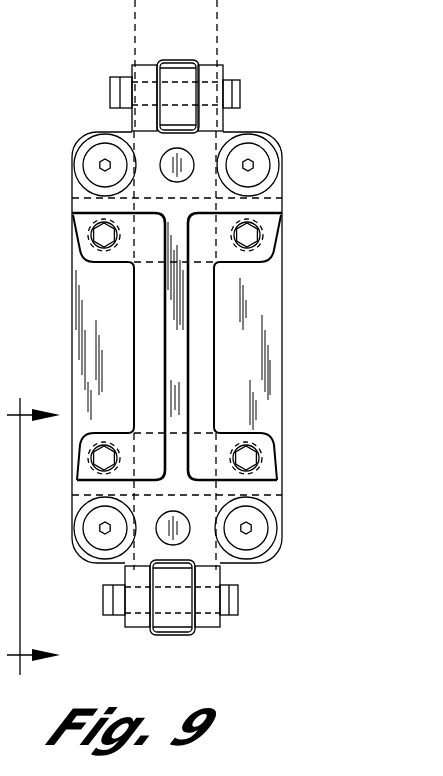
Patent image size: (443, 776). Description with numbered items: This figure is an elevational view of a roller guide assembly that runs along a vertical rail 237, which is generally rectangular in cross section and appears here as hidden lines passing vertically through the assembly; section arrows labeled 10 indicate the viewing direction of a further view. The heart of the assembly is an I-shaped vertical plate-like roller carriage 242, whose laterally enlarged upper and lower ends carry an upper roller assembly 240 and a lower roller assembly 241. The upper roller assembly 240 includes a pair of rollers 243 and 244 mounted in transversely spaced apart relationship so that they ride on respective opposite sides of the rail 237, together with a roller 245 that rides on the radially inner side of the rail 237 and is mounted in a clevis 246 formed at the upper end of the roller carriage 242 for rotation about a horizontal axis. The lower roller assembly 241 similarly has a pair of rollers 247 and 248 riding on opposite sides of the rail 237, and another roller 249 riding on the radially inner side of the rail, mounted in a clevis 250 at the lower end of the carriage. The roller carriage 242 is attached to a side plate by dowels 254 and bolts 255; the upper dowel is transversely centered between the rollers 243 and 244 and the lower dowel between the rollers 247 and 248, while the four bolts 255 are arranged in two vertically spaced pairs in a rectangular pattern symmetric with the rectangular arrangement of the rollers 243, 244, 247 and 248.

The section line for FIG. 10 is at (30, 540).
The vertical rail 237 is at (221, 2).
The upper roller assembly 240 is at (289, 139).
The lower roller assembly 241 is at (297, 434).
The roller carriage 242 is at (205, 352).
The roller 243 is at (77, 183).
The roller 244 is at (283, 178).
The roller 245 is at (180, 60).
The clevis 246 is at (143, 65).
The roller 247 is at (80, 518).
The roller 248 is at (268, 513).
The roller 249 is at (183, 634).
The clevis 250 is at (137, 628).
The dowels 254 is at (175, 183).
The bolts 255 is at (100, 236).